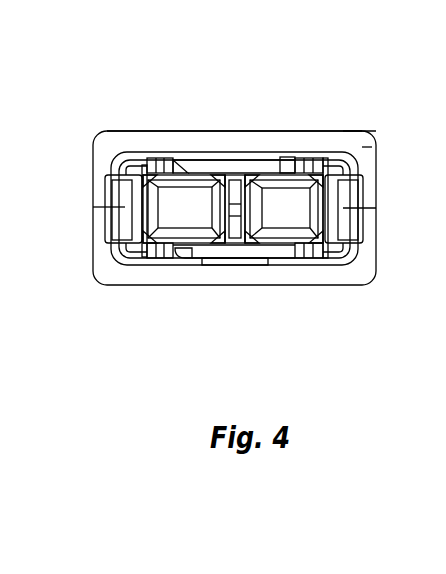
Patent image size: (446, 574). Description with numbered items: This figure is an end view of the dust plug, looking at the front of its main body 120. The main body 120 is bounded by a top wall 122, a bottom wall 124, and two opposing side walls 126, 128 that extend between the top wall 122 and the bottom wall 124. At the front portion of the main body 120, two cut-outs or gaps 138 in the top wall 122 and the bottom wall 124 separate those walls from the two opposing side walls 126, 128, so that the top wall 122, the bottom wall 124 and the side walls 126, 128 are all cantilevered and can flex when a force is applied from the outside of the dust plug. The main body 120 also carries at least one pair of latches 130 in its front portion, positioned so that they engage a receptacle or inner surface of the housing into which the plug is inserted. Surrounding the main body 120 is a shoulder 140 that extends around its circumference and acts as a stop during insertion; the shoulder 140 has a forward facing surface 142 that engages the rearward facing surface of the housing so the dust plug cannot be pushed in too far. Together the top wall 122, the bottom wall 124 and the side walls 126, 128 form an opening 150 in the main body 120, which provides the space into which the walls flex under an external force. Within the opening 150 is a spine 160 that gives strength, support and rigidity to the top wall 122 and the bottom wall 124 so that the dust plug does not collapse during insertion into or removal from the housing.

The main body 120 is at (378, 260).
The top wall 122 is at (183, 158).
The bottom wall 124 is at (193, 262).
The side wall 126 is at (362, 172).
The side wall 128 is at (106, 162).
The latch 130 is at (249, 158).
The gap 138 is at (153, 158).
The shoulder 140 is at (355, 130).
The forward facing surface 142 is at (366, 147).
The opening 150 is at (172, 218).
The spine 160 is at (233, 183).